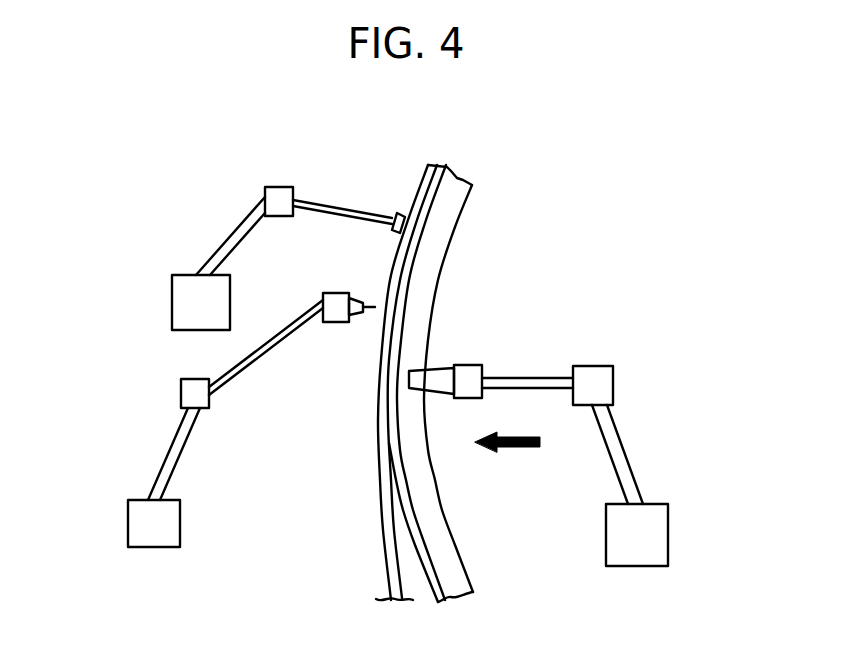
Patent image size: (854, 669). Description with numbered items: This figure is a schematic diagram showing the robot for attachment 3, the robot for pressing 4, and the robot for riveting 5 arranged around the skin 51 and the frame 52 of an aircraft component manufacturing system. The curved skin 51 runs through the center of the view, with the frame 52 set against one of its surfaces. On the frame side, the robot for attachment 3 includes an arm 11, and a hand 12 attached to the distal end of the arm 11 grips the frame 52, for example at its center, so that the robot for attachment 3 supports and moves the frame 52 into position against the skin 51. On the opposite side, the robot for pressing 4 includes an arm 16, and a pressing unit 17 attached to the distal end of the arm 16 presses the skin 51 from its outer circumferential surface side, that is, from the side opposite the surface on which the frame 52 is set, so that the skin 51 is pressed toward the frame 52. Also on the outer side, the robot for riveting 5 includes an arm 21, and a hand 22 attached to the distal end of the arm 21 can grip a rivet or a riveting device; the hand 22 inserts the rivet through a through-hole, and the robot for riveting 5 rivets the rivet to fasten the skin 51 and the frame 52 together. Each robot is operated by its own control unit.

The robot for attachment 3 is at (668, 532).
The robot for pressing 4 is at (172, 300).
The robot for riveting 5 is at (128, 527).
The arm 11 is at (622, 447).
The hand 12 is at (443, 368).
The arm 16 is at (232, 228).
The pressing unit 17 is at (403, 213).
The arm 21 is at (172, 453).
The hand 22 is at (332, 322).
The skin 51 is at (387, 538).
The frame 52 is at (442, 227).